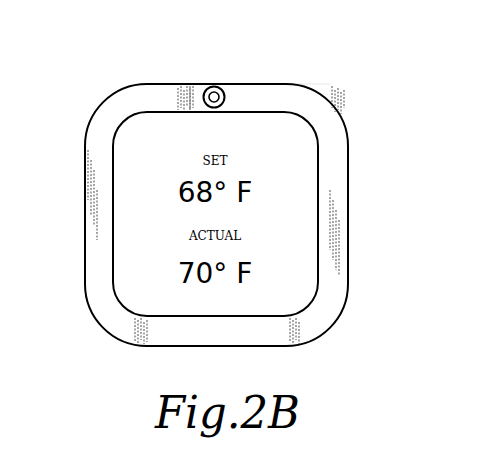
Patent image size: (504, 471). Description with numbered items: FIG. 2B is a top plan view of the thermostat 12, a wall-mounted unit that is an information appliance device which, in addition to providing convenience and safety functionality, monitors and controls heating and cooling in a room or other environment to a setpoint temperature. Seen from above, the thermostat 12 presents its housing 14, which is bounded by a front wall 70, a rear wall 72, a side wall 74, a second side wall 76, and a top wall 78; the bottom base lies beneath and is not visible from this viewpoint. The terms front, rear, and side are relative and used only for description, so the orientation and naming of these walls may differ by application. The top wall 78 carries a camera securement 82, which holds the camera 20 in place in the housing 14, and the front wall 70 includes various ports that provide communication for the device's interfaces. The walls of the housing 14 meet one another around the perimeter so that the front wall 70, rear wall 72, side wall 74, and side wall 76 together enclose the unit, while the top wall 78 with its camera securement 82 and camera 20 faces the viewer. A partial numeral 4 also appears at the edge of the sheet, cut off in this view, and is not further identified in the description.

The thermostat 12 is at (356, 108).
The housing 14 is at (350, 253).
The camera 20 is at (211, 87).
The front wall 70 is at (220, 347).
The rear wall 72 is at (223, 91).
The side wall 74 is at (350, 213).
The side wall 76 is at (84, 246).
The top wall 78 is at (108, 153).
The camera securement 82 is at (204, 97).
The partial numeral (cut off) 4 is at (3, 185).